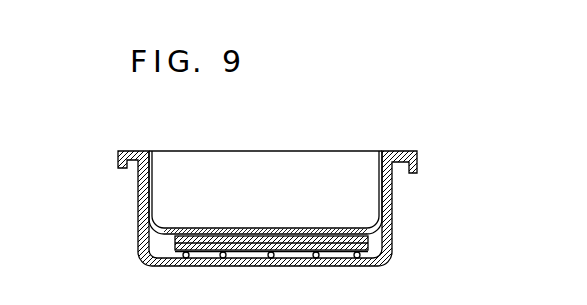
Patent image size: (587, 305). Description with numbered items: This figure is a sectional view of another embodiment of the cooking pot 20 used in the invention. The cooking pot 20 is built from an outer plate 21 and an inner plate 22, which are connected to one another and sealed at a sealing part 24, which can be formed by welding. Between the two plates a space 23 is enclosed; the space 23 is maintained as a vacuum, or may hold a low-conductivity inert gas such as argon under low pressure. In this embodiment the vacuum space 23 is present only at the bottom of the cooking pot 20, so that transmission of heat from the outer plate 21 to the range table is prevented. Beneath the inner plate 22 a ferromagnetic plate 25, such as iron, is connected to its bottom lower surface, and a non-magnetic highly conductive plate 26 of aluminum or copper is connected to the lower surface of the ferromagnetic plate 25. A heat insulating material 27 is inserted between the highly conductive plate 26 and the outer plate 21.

The cooking pot 20 is at (238, 131).
The outer plate 21 is at (139, 201).
The inner plate 22 is at (151, 197).
The space 23 is at (155, 243).
The sealing part 24 is at (411, 174).
The ferromagnetic plate 25 is at (266, 252).
The non-magnetic highly conductive plate 26 is at (291, 247).
The heat insulating material 27 is at (346, 257).